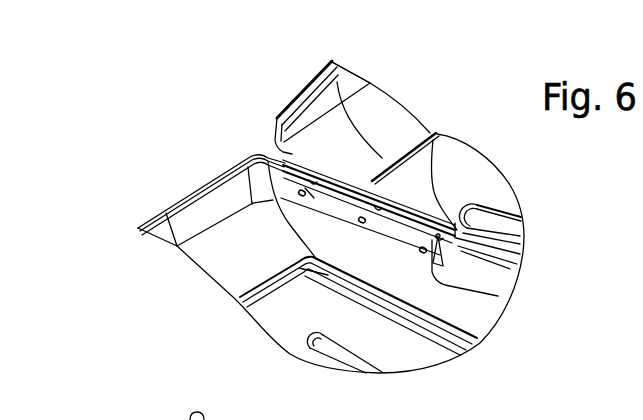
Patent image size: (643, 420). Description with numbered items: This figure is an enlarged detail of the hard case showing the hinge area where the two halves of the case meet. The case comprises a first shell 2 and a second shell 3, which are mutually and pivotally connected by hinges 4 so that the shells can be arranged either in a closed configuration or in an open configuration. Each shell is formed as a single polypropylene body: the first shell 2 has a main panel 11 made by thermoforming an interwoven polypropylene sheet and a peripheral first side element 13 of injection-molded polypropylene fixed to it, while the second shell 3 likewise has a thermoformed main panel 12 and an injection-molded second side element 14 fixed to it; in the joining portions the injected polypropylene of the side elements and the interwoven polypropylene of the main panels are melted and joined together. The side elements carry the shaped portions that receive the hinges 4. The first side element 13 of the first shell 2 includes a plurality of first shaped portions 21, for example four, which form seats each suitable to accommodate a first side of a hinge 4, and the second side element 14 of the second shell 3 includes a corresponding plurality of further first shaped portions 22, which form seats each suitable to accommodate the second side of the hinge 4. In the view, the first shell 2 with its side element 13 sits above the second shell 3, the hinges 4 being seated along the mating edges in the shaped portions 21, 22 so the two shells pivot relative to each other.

The first shell 2 is at (285, 85).
The second shell 3 is at (147, 203).
The hinges 4 is at (280, 165).
The main panel 11 is at (480, 177).
The main panel 12 is at (278, 310).
The first side element 13 is at (385, 120).
The second side element 14 is at (210, 247).
The first shaped portions 21 is at (433, 138).
The further first shaped portions 22 is at (498, 296).